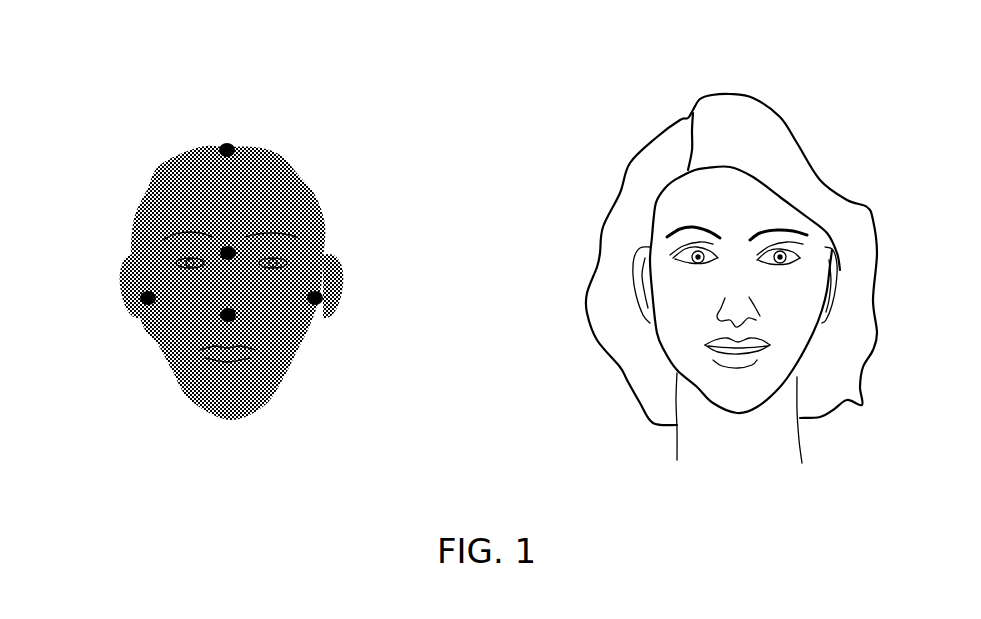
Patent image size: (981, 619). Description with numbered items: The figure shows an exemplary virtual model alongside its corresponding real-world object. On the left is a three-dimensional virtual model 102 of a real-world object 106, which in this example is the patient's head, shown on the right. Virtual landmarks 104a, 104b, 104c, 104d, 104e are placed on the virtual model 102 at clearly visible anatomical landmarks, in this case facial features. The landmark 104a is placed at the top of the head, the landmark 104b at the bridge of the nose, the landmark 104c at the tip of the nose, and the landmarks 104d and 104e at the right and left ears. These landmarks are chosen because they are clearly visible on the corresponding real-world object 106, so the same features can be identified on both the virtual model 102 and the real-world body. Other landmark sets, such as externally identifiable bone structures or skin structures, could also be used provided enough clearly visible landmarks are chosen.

The 3D virtual model 102 is at (292, 190).
The virtual landmark 104a is at (227, 143).
The virtual landmark 104b is at (232, 250).
The virtual landmark 104c is at (234, 318).
The virtual landmark 104d is at (147, 298).
The virtual landmark 104e is at (315, 298).
The real-world object 106 is at (843, 157).